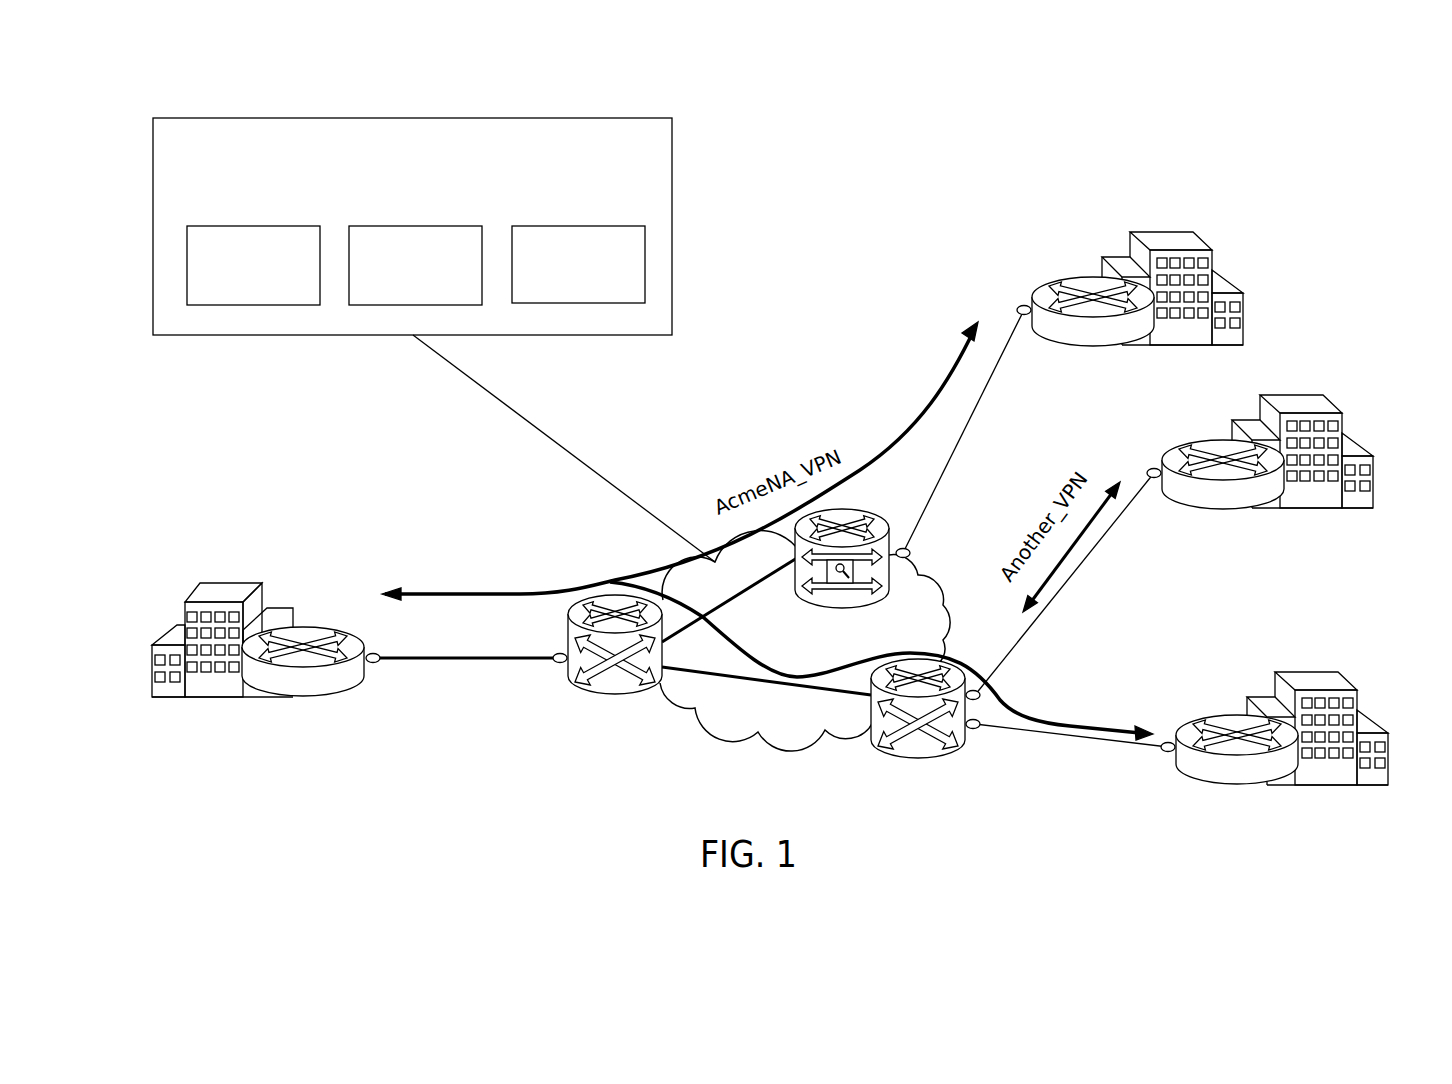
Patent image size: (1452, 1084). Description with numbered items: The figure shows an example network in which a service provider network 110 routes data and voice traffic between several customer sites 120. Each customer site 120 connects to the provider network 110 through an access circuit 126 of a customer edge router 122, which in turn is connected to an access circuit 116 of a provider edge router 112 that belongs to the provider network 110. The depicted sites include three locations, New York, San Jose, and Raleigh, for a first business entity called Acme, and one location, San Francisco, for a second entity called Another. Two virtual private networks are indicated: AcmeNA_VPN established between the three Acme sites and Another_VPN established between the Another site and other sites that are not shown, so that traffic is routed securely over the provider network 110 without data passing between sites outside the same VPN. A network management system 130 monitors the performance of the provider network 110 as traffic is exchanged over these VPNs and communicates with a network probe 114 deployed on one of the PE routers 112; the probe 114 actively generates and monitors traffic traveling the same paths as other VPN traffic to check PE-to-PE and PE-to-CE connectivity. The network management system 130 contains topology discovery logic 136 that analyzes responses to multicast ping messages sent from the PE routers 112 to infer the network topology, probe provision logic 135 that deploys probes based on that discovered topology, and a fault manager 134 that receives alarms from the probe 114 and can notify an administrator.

The service provider network 110 is at (946, 602).
The provider edge router 112 is at (756, 661).
The network probe 114 is at (843, 584).
The access circuit 116 is at (559, 652).
The customer site 120 is at (757, 510).
The customer edge router 122 is at (312, 696).
The access circuit 126 is at (375, 652).
The network management system 130 is at (458, 340).
The fault manager 134 is at (578, 226).
The probe provision logic 135 is at (428, 226).
The topology discovery logic 136 is at (258, 226).